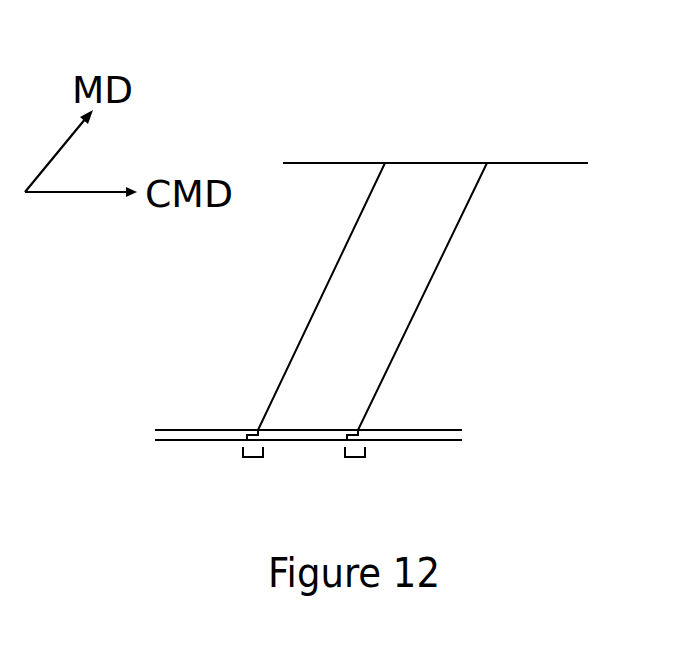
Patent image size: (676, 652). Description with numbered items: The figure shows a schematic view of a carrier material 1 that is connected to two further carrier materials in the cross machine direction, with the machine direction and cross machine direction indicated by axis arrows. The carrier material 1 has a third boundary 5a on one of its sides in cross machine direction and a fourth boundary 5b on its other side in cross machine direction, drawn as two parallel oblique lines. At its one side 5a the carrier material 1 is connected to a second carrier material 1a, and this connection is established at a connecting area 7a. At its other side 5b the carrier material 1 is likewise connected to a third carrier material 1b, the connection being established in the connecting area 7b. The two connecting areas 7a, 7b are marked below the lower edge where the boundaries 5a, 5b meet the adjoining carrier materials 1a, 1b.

The carrier material 1 is at (423, 207).
The second carrier material 1a is at (518, 207).
The third carrier material 1b is at (304, 207).
The third boundary 5a is at (427, 293).
The fourth boundary 5b is at (327, 283).
The connecting area 7a is at (355, 457).
The connecting area 7b is at (253, 457).